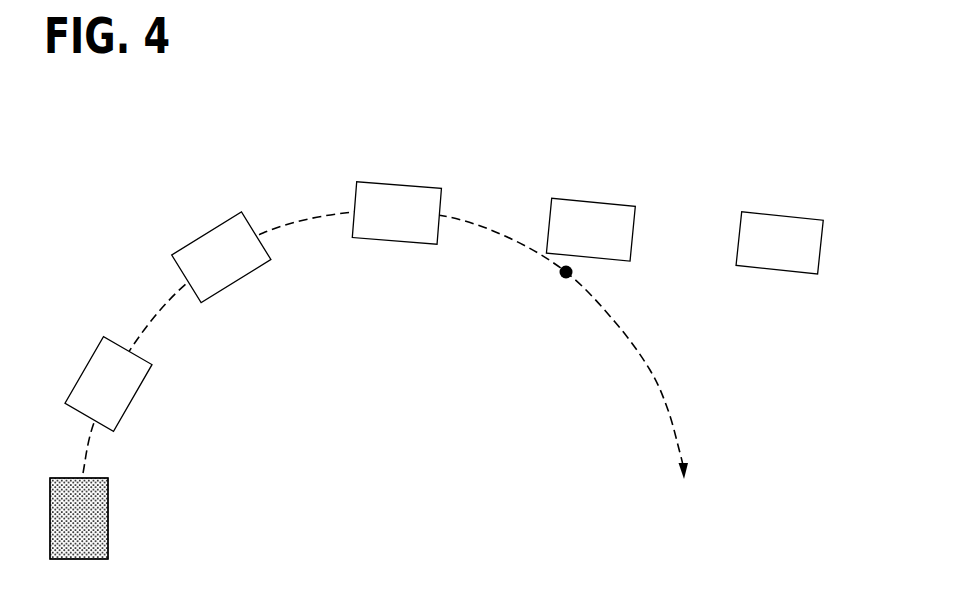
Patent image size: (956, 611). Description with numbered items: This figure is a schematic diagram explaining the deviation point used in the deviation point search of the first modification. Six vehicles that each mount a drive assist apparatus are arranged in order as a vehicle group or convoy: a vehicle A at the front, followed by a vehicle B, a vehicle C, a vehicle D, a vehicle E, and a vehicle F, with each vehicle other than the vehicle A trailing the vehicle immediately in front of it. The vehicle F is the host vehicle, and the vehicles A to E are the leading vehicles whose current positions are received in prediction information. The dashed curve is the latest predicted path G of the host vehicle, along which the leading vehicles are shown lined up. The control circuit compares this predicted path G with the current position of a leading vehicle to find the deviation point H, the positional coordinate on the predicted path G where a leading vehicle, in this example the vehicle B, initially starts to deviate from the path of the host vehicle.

The vehicle A is at (807, 217).
The vehicle B is at (619, 206).
The vehicle C is at (422, 188).
The vehicle D is at (225, 220).
The vehicle E is at (96, 350).
The vehicle F is at (49, 498).
The predicted path G is at (676, 412).
The deviation point H is at (565, 280).